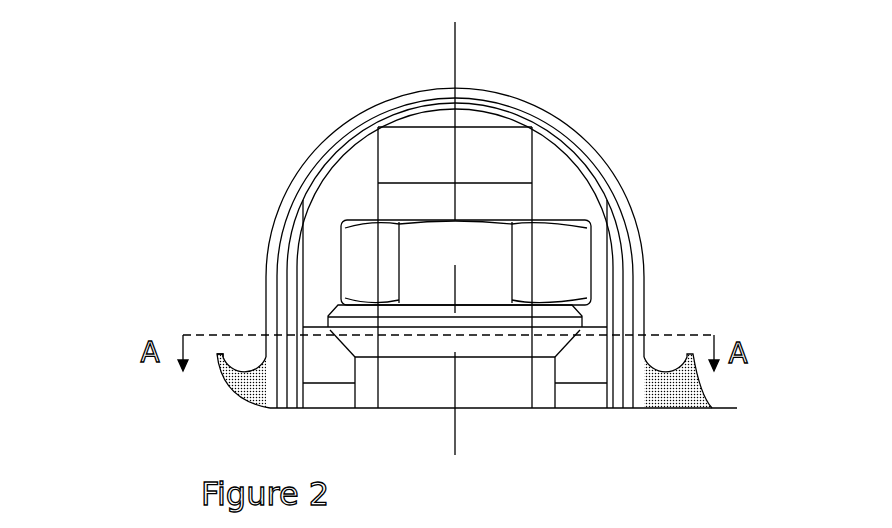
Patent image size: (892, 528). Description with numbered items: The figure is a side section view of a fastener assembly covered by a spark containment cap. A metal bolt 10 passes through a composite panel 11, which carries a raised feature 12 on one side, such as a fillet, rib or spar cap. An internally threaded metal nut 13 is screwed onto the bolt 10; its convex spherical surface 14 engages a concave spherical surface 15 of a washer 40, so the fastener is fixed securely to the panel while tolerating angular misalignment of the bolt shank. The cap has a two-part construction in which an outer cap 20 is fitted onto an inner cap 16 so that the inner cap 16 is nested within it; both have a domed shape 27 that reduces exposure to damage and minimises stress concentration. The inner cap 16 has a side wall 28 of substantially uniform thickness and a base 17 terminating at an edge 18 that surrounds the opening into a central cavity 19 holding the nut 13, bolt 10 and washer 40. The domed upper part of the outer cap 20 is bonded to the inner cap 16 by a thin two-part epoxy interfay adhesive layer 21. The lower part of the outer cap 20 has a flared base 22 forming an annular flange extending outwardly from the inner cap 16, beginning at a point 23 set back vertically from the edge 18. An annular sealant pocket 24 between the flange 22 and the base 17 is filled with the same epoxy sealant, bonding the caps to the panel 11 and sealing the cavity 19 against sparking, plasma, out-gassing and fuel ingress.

The metal bolt 10 is at (513, 148).
The composite panel 11 is at (725, 408).
The raised feature 12 is at (222, 373).
The internally threaded metal nut 13 is at (560, 255).
The convex spherical surface 14 is at (572, 338).
The concave spherical surface 15 is at (330, 332).
The inner cap 16 is at (330, 143).
The base 17 is at (288, 395).
The edge 18 is at (620, 410).
The central cavity 19 is at (328, 201).
The outer cap 20 is at (292, 172).
The interfay adhesive layer 21 is at (358, 122).
The flared base 22 is at (222, 380).
The point 23 is at (644, 362).
The annular sealant pocket 24 is at (260, 387).
The domed shape 27 is at (612, 160).
The side wall 28 is at (290, 302).
The washer 40 is at (585, 373).